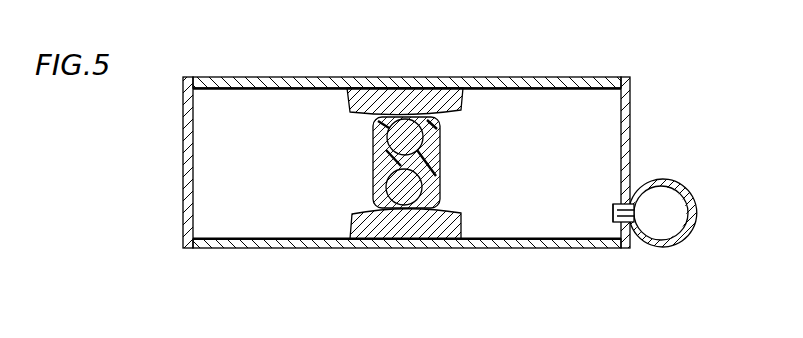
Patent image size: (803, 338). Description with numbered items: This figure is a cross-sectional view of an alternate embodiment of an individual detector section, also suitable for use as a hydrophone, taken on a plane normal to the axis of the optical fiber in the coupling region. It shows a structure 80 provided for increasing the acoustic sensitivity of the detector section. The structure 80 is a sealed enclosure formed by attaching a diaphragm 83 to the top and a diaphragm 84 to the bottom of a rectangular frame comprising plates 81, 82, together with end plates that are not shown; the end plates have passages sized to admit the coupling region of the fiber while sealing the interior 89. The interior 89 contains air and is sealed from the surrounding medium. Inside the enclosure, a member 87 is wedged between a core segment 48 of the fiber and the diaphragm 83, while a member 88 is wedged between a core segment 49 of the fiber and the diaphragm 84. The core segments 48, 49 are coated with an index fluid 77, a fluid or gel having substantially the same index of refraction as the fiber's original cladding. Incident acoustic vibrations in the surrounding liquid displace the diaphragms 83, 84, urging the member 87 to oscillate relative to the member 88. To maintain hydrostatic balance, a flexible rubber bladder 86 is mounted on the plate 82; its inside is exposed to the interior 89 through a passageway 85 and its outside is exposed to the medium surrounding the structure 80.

The core segment 48 is at (427, 142).
The core segment 49 is at (421, 192).
The index fluid 77 is at (408, 162).
The structure 80 is at (411, 168).
The plate 81 is at (183, 156).
The plate 82 is at (631, 108).
The diaphragm 83 is at (497, 88).
The diaphragm 84 is at (538, 248).
The passageway 85 is at (627, 200).
The rubber bladder 86 is at (696, 218).
The member 87 is at (386, 98).
The member 88 is at (401, 228).
The interior 89 is at (572, 118).